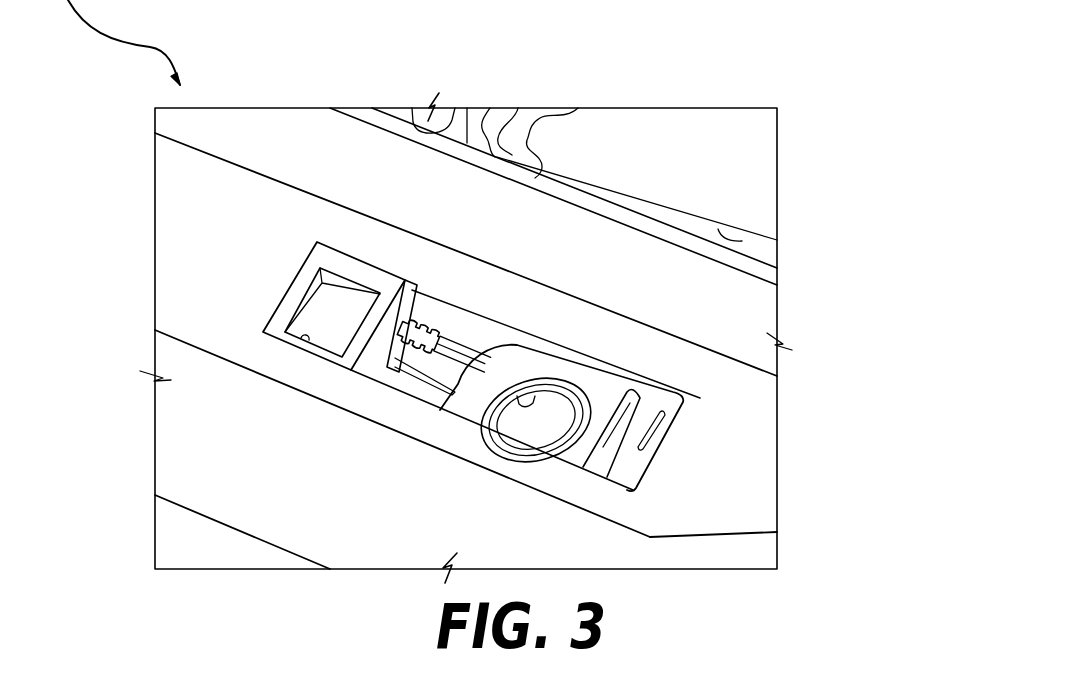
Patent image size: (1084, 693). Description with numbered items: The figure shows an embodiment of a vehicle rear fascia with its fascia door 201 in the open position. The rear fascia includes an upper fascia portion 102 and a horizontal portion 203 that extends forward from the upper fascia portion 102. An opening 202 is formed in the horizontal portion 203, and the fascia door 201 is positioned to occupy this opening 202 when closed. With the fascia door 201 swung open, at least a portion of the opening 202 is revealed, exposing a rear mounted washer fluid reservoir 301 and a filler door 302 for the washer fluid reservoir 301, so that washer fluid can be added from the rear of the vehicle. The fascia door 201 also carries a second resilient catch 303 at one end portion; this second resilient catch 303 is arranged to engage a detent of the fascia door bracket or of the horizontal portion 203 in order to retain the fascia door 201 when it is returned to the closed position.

The upper fascia portion 102 is at (248, 459).
The fascia door 201 is at (313, 303).
The opening 202 is at (527, 333).
The horizontal portion 203 is at (212, 299).
The washer fluid reservoir 301 is at (588, 385).
The filler door 302 is at (608, 441).
The second resilient catch 303 is at (397, 318).